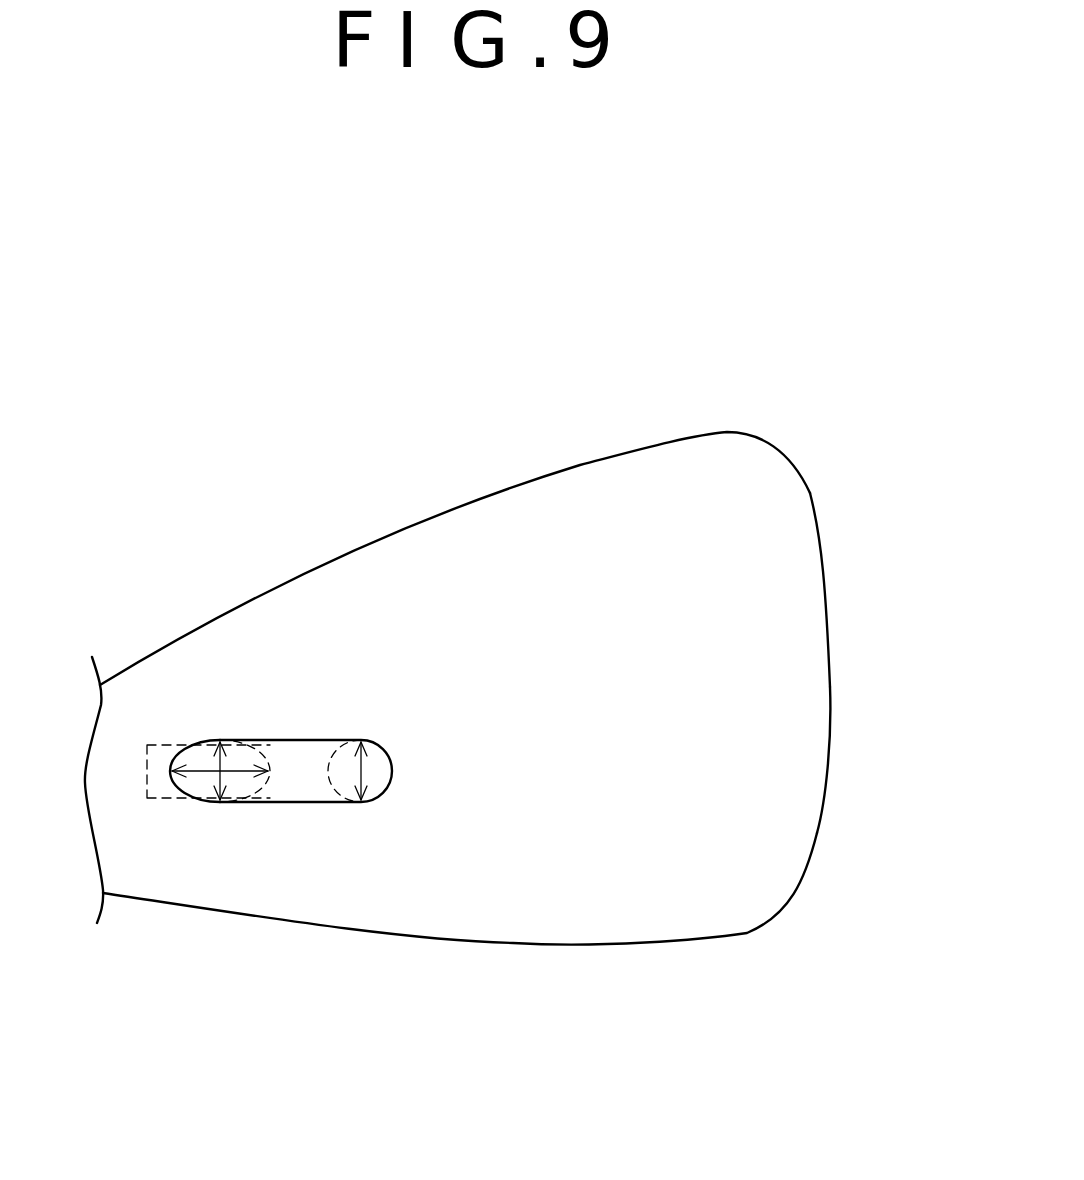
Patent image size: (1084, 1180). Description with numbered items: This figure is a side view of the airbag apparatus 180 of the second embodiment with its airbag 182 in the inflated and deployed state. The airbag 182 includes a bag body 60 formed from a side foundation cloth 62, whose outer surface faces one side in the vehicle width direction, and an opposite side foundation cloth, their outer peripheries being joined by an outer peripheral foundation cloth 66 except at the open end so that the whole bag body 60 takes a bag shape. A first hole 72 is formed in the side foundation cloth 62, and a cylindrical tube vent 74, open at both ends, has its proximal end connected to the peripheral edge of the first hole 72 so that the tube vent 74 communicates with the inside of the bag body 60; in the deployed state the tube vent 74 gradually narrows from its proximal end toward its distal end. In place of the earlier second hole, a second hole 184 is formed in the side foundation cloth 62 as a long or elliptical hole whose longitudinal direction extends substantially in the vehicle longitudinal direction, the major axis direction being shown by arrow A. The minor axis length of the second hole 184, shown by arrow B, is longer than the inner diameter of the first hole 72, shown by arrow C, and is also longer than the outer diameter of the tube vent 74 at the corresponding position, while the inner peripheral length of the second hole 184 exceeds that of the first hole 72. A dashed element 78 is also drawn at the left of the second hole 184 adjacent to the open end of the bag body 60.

The airbag 182 is at (520, 423).
The airbag apparatus 180 is at (447, 615).
The bag body 60 is at (823, 562).
The outer peripheral foundation cloth 66 is at (830, 687).
The side foundation cloth 62 is at (524, 913).
The inflator 78 is at (85, 772).
The tube vent 74 is at (308, 788).
The second hole 184 is at (203, 803).
The first hole 72 is at (345, 797).
The arrow A is at (238, 778).
The arrow B is at (218, 757).
The arrow C is at (362, 767).